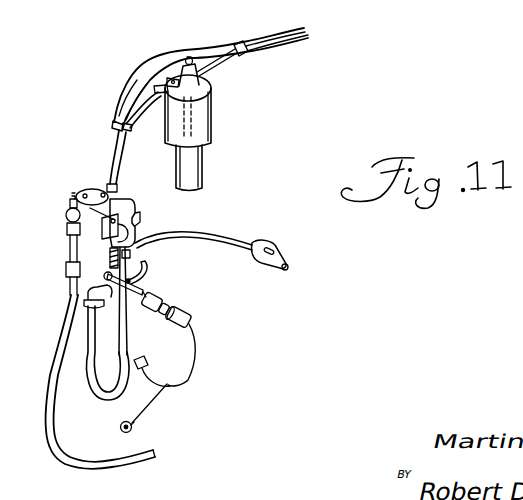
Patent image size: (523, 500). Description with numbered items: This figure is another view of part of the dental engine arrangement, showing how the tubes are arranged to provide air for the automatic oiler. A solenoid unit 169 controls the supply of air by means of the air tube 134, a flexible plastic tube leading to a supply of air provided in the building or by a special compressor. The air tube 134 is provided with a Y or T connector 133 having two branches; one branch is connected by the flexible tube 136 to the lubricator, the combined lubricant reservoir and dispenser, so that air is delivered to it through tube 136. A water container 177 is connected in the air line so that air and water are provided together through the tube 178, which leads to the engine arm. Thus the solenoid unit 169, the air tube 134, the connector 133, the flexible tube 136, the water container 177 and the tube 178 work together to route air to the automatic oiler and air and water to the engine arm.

The flexible tube 136 is at (163, 56).
The tube 178 is at (229, 55).
The water container 177 is at (200, 127).
The Y or T connector 133 is at (123, 137).
The air tube 134 is at (111, 178).
The solenoid unit 169 is at (97, 247).